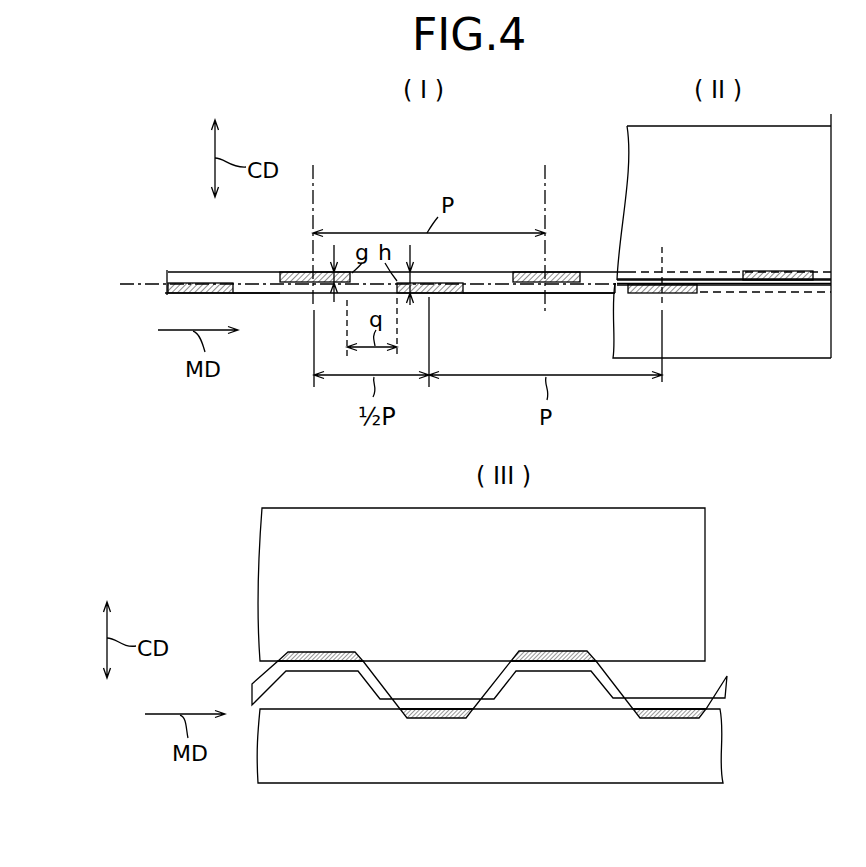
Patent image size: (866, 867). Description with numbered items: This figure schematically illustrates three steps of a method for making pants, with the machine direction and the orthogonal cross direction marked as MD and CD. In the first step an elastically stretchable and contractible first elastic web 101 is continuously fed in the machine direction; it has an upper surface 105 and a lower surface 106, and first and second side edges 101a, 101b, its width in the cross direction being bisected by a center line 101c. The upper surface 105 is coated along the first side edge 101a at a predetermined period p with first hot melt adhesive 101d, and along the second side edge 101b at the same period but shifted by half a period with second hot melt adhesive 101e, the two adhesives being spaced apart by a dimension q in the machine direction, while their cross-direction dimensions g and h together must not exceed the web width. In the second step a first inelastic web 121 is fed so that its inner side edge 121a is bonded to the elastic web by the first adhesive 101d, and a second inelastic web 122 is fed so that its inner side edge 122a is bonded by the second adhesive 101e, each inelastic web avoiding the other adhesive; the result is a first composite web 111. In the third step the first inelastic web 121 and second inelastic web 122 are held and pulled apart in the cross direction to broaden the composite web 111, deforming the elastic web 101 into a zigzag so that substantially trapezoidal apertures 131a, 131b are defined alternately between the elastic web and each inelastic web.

The first elastic web 101 is at (488, 461).
The upper surface 105 is at (229, 273).
The lower surface 106 is at (261, 290).
The center line 101c is at (135, 287).
The first hot melt adhesive 101d is at (287, 273).
The first side edge 101a is at (422, 272).
The second hot melt adhesive 101e is at (452, 292).
The second side edge 101b is at (566, 292).
The first composite web 111 is at (552, 458).
The first inelastic web 121 is at (546, 374).
The second inelastic web 122 is at (718, 364).
The inner side edge of the second inelastic web 122a is at (725, 287).
The inner side edge of the first inelastic web 121a is at (708, 276).
The trapezoidal aperture 131a is at (433, 678).
The trapezoidal aperture 131b is at (548, 690).